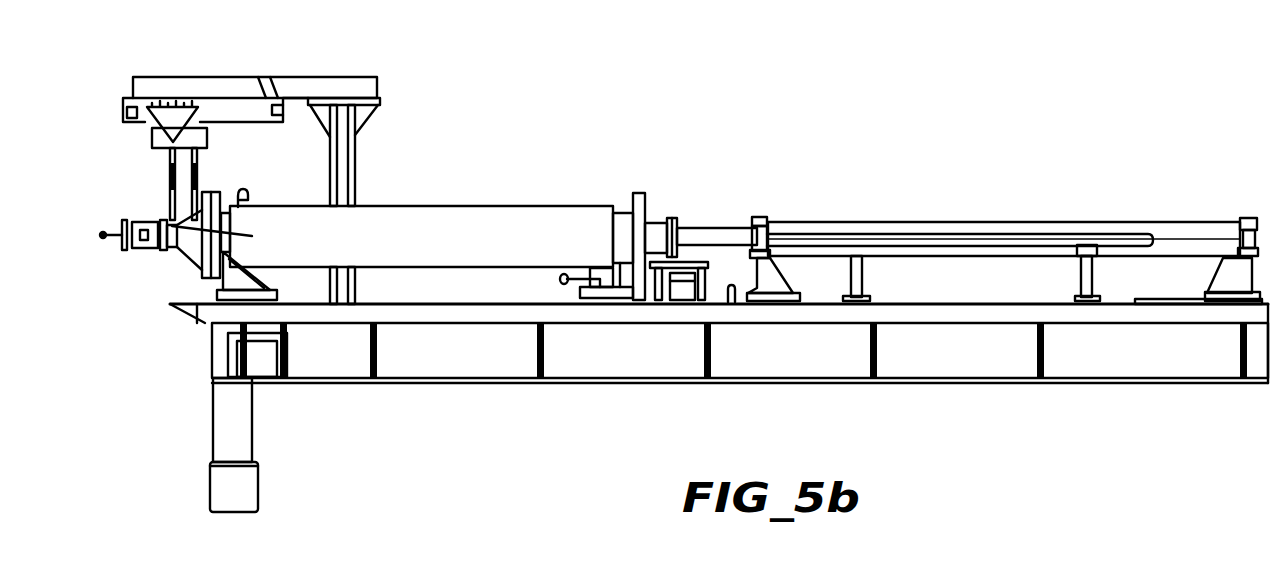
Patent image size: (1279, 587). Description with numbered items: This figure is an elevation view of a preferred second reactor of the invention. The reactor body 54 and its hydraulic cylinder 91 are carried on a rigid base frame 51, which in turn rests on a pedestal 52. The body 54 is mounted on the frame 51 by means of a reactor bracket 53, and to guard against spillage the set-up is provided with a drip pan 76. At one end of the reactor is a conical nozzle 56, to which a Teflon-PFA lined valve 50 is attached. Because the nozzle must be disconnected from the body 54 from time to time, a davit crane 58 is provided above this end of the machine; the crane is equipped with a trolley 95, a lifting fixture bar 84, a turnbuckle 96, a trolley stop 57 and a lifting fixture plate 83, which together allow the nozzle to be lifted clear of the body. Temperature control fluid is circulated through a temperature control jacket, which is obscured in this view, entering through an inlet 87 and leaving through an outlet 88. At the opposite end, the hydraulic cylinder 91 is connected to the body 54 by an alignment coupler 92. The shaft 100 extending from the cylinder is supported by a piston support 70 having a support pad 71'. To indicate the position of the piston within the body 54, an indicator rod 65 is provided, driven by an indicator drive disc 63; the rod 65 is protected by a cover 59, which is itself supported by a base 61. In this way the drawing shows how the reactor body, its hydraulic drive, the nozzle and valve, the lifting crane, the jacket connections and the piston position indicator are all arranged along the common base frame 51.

The Teflon-PFA lined valve 50 is at (135, 252).
The rigid base frame 51 is at (388, 380).
The pedestal 52 is at (230, 425).
The reactor bracket 53 is at (197, 325).
The reactor body 54 is at (465, 227).
The conical nozzle 56 is at (190, 243).
The trolley stop 57 is at (285, 110).
The davit crane 58 is at (363, 85).
The cover 59 is at (997, 237).
The base 61 is at (855, 272).
The indicator drive disc 63 is at (690, 218).
The indicator rod 65 is at (703, 225).
The piston support 70 is at (707, 283).
The support pad 71' is at (663, 349).
The drip pan 76 is at (170, 313).
The lifting fixture plate 83 is at (227, 246).
The lifting fixture bar 84 is at (208, 135).
The inlet 87 is at (577, 285).
The outlet 88 is at (248, 186).
The hydraulic cylinder 91 is at (947, 222).
The alignment coupler 92 is at (640, 219).
The trolley 95 is at (162, 118).
The turnbuckle 96 is at (170, 178).
The shaft 100 is at (733, 223).